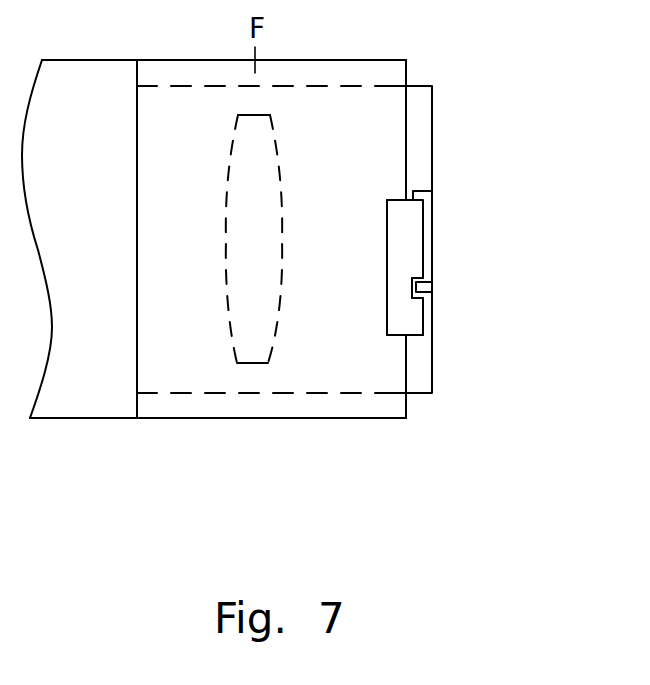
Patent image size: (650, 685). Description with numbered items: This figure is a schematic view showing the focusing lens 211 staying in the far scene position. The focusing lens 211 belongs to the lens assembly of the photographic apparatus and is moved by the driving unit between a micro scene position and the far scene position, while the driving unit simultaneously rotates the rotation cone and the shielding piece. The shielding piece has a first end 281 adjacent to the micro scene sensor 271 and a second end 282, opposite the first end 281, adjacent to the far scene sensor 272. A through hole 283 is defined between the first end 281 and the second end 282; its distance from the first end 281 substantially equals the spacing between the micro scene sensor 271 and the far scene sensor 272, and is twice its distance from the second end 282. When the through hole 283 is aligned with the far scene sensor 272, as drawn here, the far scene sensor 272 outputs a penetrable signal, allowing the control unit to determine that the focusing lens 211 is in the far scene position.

The focusing lens 211 is at (256, 350).
The first end 281 is at (398, 212).
The second end 282 is at (412, 336).
The micro scene sensor 271 is at (430, 194).
The far scene sensor 272 is at (427, 286).
The through hole 283 is at (414, 278).